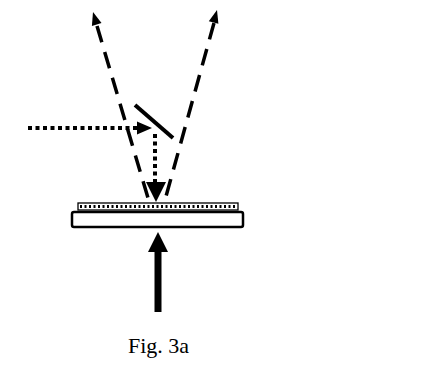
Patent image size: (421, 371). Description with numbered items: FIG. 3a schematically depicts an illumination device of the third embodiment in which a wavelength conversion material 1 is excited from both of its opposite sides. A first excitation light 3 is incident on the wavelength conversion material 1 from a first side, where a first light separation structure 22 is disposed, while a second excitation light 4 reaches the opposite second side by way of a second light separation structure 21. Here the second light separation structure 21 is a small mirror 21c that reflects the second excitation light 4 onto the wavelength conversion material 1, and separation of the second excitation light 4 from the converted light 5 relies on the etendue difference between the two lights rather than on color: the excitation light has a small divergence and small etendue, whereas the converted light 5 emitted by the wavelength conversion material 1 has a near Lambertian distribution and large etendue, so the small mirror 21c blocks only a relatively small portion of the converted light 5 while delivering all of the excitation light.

The converted light 5 is at (263, 102).
The second light separation structure 21 is at (257, 84).
The small mirror 21c is at (154, 121).
The second excitation light 4 is at (195, 136).
The wavelength conversion material 1 is at (222, 177).
The first light separation structure 22 is at (220, 204).
The first excitation light 3 is at (255, 272).